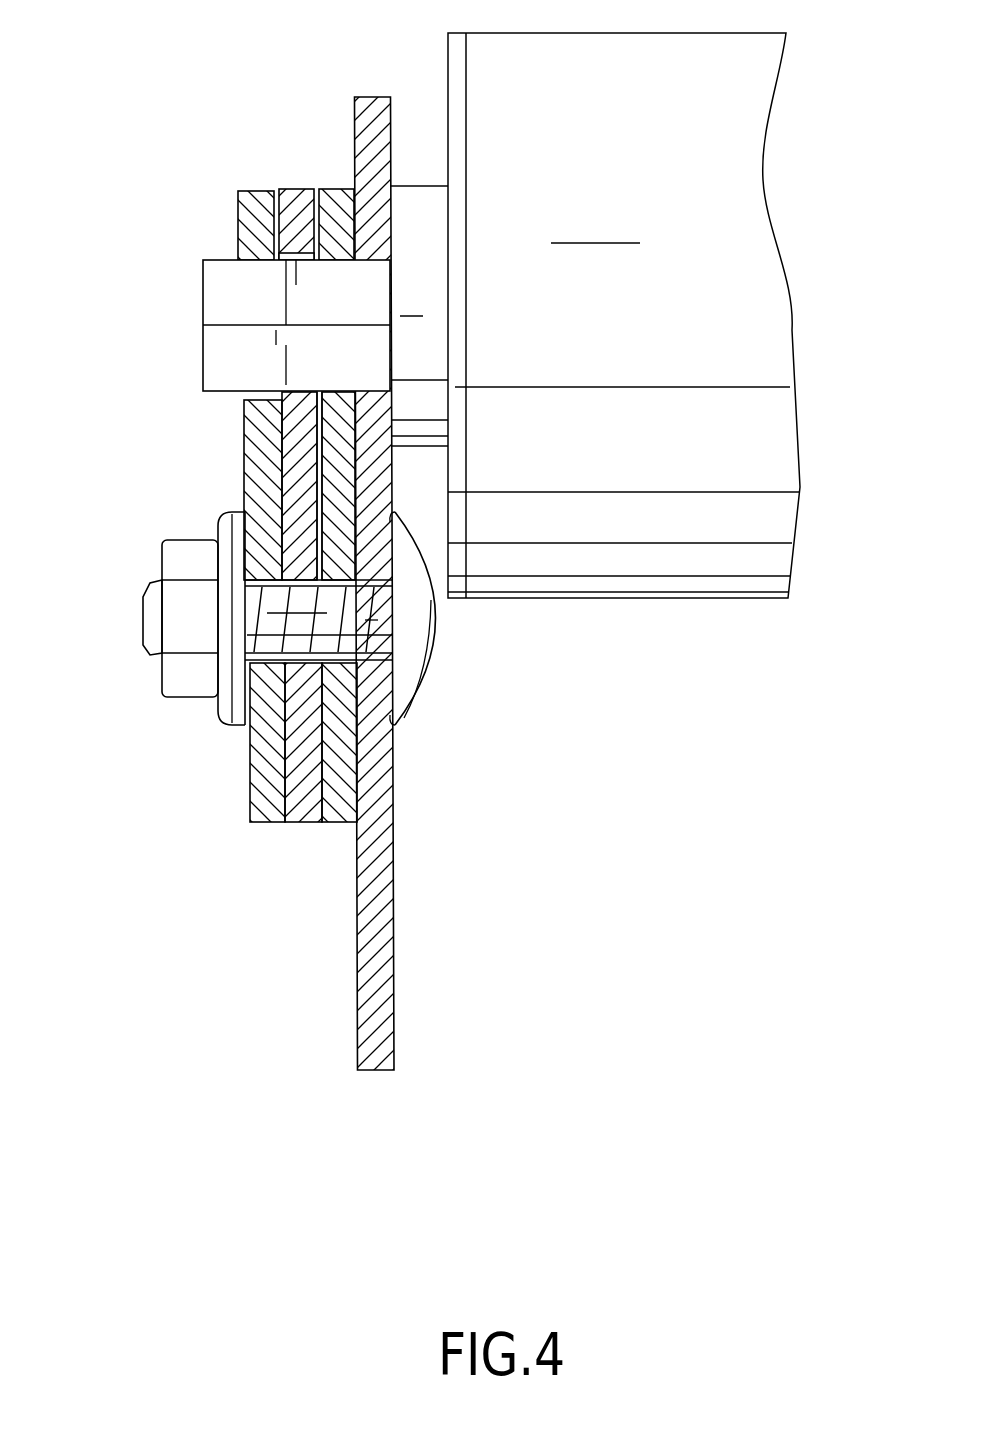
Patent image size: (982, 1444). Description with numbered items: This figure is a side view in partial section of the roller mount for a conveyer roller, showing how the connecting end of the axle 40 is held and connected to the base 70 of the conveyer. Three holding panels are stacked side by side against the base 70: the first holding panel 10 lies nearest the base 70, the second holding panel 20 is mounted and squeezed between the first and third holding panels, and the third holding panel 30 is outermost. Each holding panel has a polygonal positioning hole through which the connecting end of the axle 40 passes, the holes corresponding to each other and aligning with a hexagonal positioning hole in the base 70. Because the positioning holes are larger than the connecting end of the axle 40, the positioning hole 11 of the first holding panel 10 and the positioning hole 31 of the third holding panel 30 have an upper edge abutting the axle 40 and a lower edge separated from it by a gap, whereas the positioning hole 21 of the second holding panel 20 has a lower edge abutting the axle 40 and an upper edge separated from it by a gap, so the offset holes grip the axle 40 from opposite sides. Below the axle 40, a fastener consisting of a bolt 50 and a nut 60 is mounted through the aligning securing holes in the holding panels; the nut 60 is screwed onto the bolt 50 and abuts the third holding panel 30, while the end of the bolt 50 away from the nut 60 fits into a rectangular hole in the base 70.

The first holding panel 10 is at (344, 192).
The positioning hole 11 is at (330, 400).
The second holding panel 20 is at (305, 192).
The positioning hole 21 is at (297, 250).
The third holding panel 30 is at (257, 196).
The positioning hole 31 is at (262, 400).
The axle 40 is at (215, 307).
The bolt 50 is at (405, 680).
The nut 60 is at (198, 683).
The base 70 is at (376, 105).